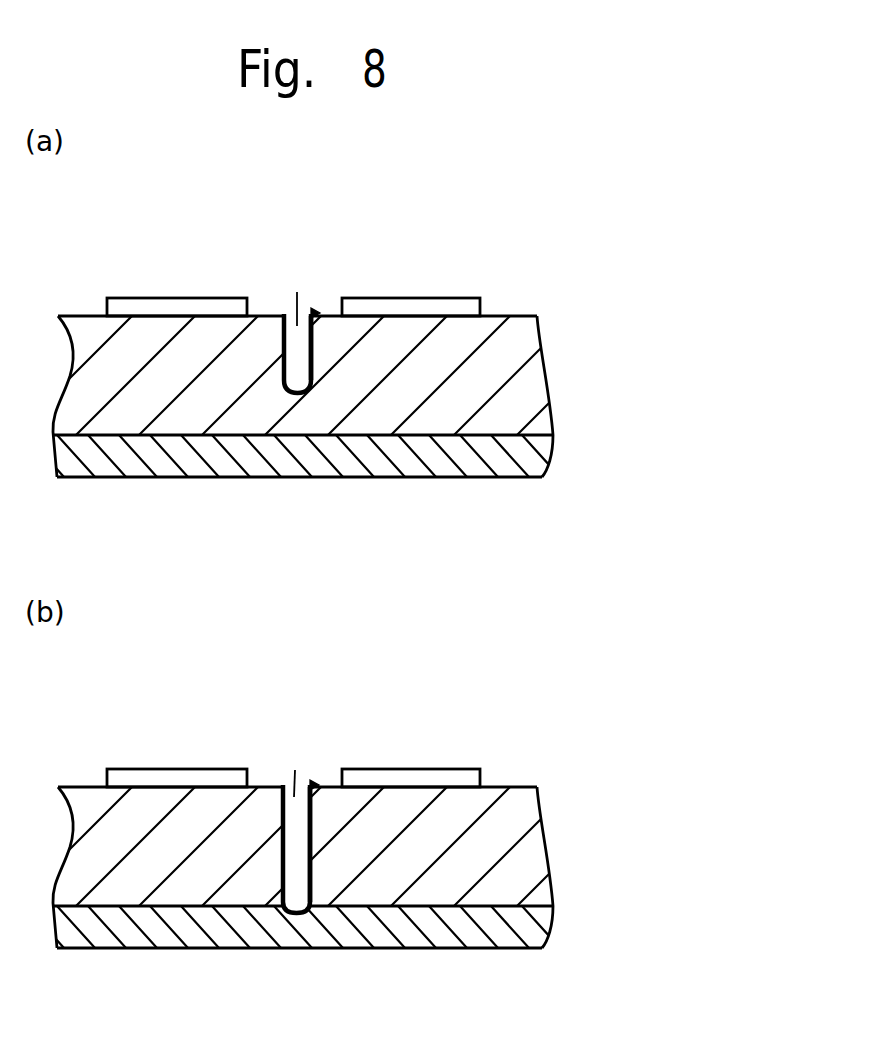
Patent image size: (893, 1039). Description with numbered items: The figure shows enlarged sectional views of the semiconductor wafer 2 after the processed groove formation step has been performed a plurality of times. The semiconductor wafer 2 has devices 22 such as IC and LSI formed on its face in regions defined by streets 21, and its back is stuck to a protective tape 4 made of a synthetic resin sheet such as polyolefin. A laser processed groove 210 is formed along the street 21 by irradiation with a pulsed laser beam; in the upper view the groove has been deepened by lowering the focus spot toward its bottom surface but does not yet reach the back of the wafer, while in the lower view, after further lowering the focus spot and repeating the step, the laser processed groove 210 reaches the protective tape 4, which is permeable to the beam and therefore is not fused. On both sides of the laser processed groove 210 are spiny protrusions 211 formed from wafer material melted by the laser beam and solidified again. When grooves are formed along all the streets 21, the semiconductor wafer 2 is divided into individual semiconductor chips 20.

The semiconductor wafer 2 is at (510, 289).
The semiconductor chip 20 is at (535, 384).
The protective tape 4 is at (528, 463).
The street 21 is at (270, 314).
The laser processed groove 210 is at (315, 312).
The spiny protrusion 211 is at (297, 292).
The device 22 is at (147, 308).